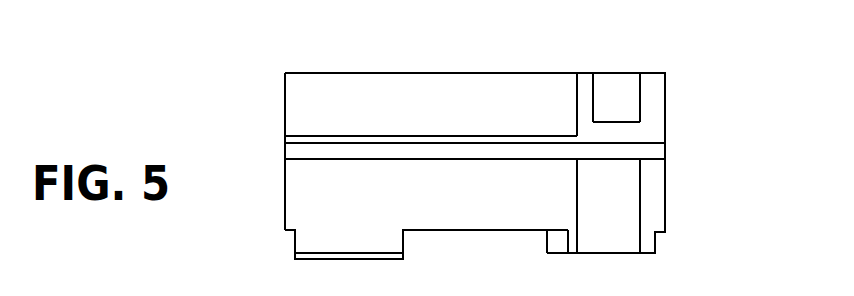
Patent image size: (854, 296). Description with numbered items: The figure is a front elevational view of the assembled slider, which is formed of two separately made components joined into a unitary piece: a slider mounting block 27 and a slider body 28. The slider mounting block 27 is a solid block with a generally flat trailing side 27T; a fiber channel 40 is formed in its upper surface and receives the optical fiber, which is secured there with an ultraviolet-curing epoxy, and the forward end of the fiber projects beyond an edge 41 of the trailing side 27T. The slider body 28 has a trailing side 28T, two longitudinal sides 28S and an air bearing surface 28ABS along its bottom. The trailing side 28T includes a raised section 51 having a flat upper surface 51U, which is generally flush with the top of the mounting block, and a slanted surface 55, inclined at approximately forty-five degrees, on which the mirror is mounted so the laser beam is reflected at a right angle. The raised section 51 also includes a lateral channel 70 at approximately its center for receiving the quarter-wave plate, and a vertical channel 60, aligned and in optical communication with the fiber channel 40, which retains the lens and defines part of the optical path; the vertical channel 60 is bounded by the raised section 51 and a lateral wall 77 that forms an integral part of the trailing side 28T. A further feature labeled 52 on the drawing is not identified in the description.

The raised section 51 is at (383, 74).
The flat upper surface 51U is at (458, 72).
The slanted surface 55 is at (458, 121).
The lateral channel 70 is at (300, 152).
The trailing side 27T is at (285, 99).
The trailing side 28T is at (284, 197).
The air bearing surface 28ABS is at (363, 261).
The step 52 is at (463, 263).
The longitudinal sides 28S is at (536, 274).
The vertical channel 60 is at (639, 222).
The slider body 28 is at (666, 195).
The slider mounting block 27 is at (666, 133).
The fiber channel 40 is at (639, 95).
The lateral wall 77 is at (666, 88).
The edge 41 is at (652, 115).